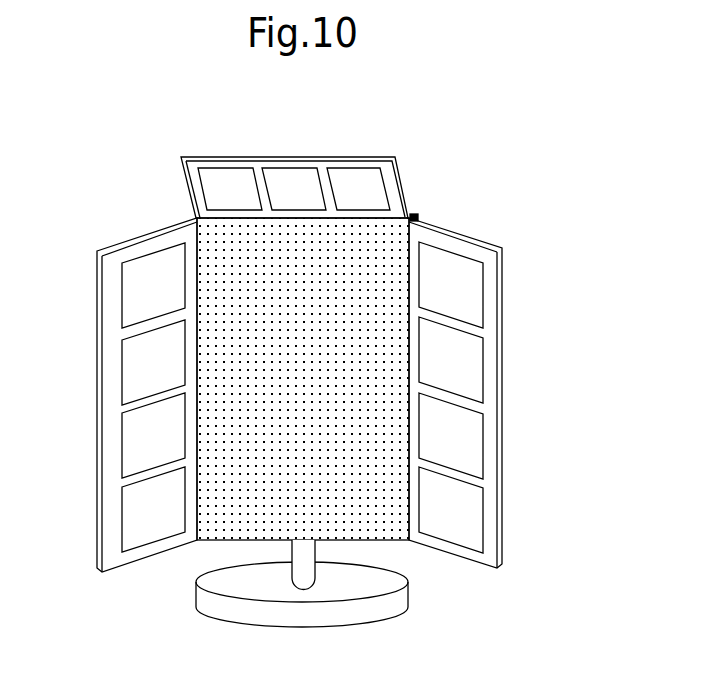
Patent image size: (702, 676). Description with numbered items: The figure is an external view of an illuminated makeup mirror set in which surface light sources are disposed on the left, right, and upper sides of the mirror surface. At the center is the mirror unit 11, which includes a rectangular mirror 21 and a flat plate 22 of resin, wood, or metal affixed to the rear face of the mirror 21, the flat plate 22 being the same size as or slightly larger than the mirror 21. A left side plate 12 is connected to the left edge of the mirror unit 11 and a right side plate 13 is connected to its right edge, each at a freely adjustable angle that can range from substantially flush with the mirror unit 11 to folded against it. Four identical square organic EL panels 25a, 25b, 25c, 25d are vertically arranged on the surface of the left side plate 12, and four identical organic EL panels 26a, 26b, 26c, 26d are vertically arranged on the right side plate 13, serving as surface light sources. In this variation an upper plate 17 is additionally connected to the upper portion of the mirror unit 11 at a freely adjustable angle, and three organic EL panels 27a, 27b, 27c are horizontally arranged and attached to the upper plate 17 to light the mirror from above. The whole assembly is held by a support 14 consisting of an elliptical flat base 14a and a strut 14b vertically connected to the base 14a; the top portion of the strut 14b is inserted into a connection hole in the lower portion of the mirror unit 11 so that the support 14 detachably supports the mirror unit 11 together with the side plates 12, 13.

The mirror unit 11 is at (253, 391).
The left side plate 12 is at (117, 374).
The right side plate 13 is at (491, 386).
The support 14 is at (316, 599).
The base 14a is at (205, 598).
The strut 14b is at (293, 578).
The upper plate 17 is at (321, 167).
The mirror 21 is at (203, 237).
The flat plate 22 is at (414, 216).
The organic EL panel 25a is at (128, 293).
The organic EL panel 25b is at (128, 372).
The organic EL panel 25c is at (128, 442).
The organic EL panel 25d is at (128, 511).
The organic EL panel 26a is at (475, 292).
The organic EL panel 26b is at (473, 371).
The organic EL panel 26c is at (473, 443).
The organic EL panel 26d is at (473, 517).
The organic EL panel 27a is at (215, 178).
The organic EL panel 27b is at (283, 178).
The organic EL panel 27c is at (343, 180).